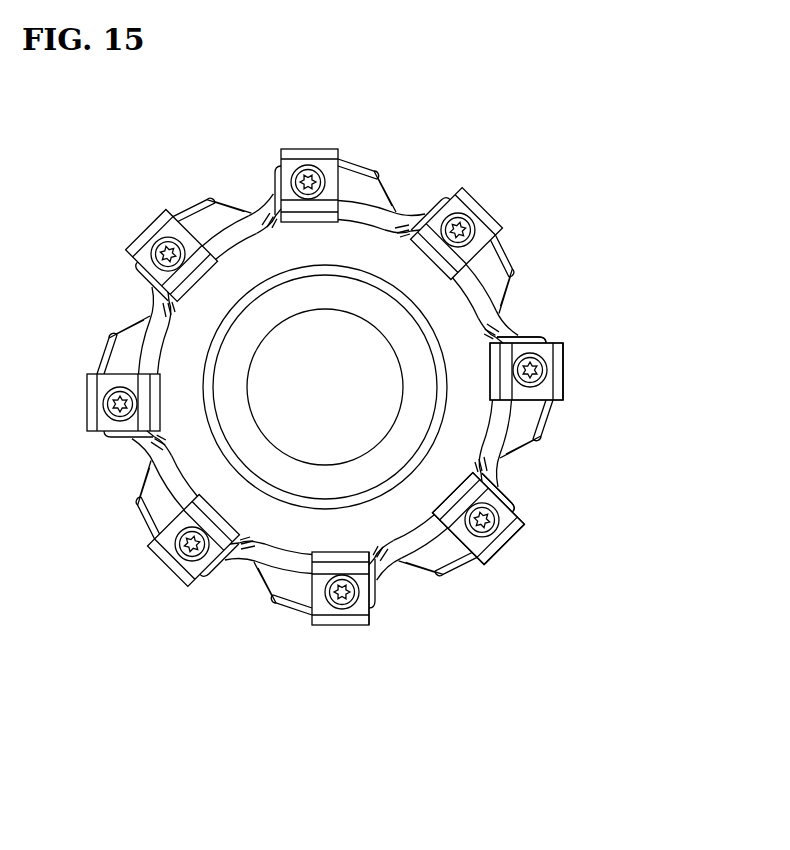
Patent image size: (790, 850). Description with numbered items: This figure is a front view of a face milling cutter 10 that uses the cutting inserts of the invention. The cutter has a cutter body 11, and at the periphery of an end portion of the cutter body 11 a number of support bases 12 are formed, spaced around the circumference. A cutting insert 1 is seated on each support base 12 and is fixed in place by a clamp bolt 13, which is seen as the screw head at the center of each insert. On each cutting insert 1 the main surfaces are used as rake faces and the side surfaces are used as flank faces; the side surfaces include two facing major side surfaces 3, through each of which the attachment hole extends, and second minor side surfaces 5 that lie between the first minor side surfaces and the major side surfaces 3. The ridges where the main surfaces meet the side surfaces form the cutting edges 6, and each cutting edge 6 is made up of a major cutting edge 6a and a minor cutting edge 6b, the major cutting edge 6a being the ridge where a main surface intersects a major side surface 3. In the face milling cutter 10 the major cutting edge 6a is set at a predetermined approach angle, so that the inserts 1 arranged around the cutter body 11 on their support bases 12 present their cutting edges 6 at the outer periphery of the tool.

The cutting insert 1 is at (583, 370).
The major side surface 3 is at (542, 342).
The second minor side surface 5 is at (508, 343).
The cutting edge 6 is at (452, 616).
The major cutting edge 6a is at (380, 566).
The minor cutting edge 6b is at (376, 553).
The face milling cutter 10 is at (481, 151).
The cutter body 11 is at (457, 300).
The support base 12 is at (558, 397).
The clamp bolt 13 is at (510, 498).